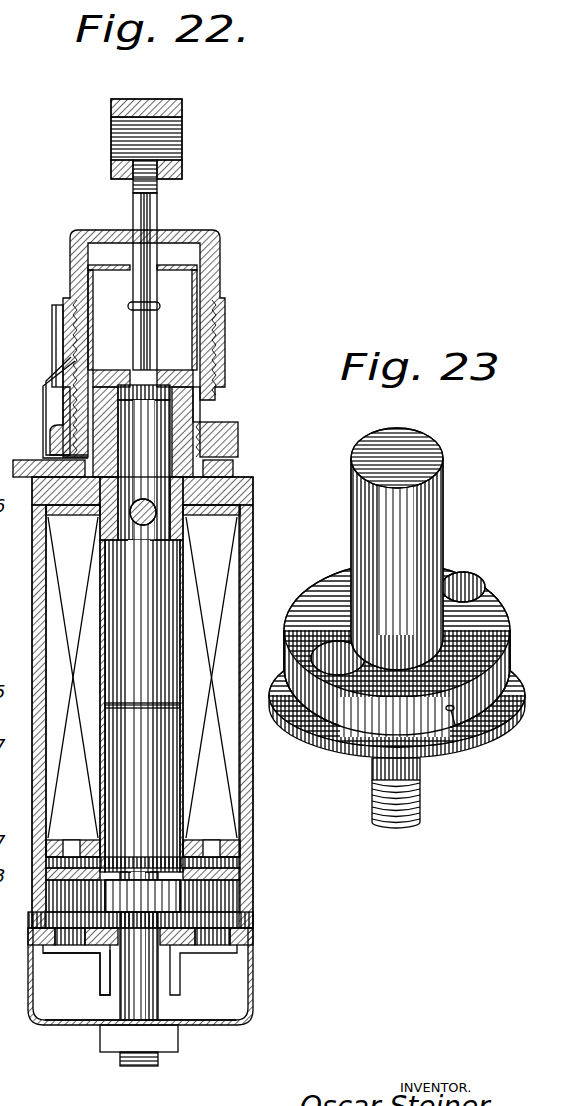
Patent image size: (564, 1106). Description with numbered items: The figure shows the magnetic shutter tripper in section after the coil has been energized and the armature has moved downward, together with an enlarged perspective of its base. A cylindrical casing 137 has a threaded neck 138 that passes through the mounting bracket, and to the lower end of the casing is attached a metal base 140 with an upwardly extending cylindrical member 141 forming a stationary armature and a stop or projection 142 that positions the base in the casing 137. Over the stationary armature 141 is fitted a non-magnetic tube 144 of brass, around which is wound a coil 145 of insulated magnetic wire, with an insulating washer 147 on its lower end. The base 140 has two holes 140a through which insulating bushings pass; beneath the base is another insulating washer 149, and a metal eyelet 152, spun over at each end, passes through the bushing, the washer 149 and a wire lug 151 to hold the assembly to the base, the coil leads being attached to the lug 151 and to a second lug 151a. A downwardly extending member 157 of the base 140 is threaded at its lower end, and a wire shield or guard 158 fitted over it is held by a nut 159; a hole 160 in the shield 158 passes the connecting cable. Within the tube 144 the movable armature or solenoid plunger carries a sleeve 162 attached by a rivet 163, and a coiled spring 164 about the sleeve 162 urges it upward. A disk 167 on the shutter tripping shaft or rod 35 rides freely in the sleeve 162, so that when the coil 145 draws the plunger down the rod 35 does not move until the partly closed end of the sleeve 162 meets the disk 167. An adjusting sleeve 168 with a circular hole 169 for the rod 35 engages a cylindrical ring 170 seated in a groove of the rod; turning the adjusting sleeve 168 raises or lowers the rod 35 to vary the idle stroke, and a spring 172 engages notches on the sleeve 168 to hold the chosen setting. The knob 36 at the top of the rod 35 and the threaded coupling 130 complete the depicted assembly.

In FIG. 22, the knob 36 is at (184, 166).
In FIG. 22, the shutter tripping shaft or rod 35 is at (158, 220).
In FIG. 22, the adjusting sleeve 168 is at (220, 260).
In FIG. 22, the circular hole 169 is at (128, 242).
In FIG. 22, the cylindrical ring 170 is at (128, 306).
In FIG. 22, the spring 172 is at (58, 357).
In FIG. 22, the sleeve 162 is at (173, 370).
In FIG. 22, the disk 167 is at (147, 400).
In FIG. 22, the rivet 163 is at (144, 500).
In FIG. 22, the tube body 130 is at (212, 408).
In FIG. 22, the coiled spring 164 is at (200, 394).
In FIG. 22, the threaded neck 138 is at (238, 438).
In FIG. 22, the cylindrical casing 137 is at (250, 793).
In FIG. 22, the non-magnetic tube 144 is at (184, 573).
In FIG. 22, the coil 145 is at (218, 578).
In FIG. 23, the coil 145 is at (456, 725).
In FIG. 22, the insulating washer 147 is at (242, 852).
In FIG. 22, the metal eyelet 152 is at (232, 872).
In FIG. 22, the metal base 140 is at (210, 895).
In FIG. 23, the metal base 140 is at (496, 600).
In FIG. 22, the stop or projection 142 is at (248, 920).
In FIG. 23, the stop or projection 142 is at (485, 735).
In FIG. 22, the insulating washer 149 is at (243, 937).
In FIG. 22, the hole 160 is at (30, 990).
In FIG. 22, the wire shield or guard 158 is at (246, 1018).
In FIG. 22, the wire lug 151 is at (98, 988).
In FIG. 22, the lug 151a is at (178, 985).
In FIG. 22, the nut 159 is at (107, 1038).
In FIG. 22, the downwardly extending member 157 is at (120, 1060).
In FIG. 23, the downwardly extending member 157 is at (372, 803).
In FIG. 23, the cylindrical member or stationary armature 141 is at (432, 508).
In FIG. 23, the holes 140a is at (468, 585).